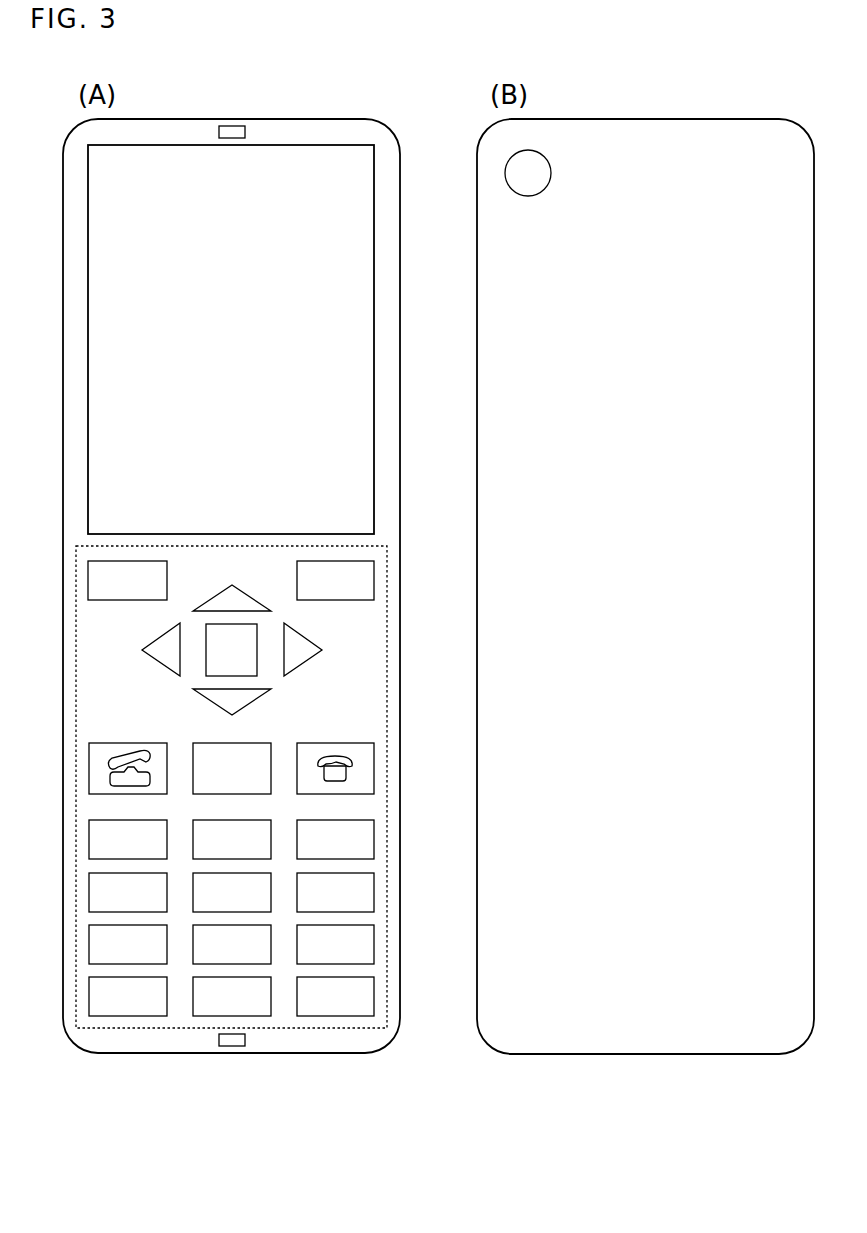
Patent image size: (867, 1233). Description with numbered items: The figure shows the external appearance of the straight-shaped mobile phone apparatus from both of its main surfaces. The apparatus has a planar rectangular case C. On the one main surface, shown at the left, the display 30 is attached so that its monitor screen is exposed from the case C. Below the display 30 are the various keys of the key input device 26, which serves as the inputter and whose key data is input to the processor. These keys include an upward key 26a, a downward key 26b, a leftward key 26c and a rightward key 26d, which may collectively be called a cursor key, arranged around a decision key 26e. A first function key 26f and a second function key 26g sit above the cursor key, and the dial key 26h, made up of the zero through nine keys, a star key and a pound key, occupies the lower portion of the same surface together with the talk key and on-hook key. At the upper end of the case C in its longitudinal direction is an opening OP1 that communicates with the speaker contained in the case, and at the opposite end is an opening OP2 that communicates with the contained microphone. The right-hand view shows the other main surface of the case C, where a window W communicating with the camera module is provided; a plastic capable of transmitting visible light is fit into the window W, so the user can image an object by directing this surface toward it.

The display 30 is at (377, 348).
The key input device 26 is at (76, 839).
The upward key 26a is at (263, 600).
The downward key 26b is at (255, 700).
The leftward key 26c is at (147, 650).
The rightward key 26d is at (297, 660).
The decision key 26e is at (205, 672).
The first function key 26f is at (97, 585).
The second function key 26g is at (366, 588).
The dial key 26h is at (378, 822).
The opening OP1 is at (214, 131).
The opening OP2 is at (213, 1040).
The case C is at (400, 785).
The window W is at (553, 161).